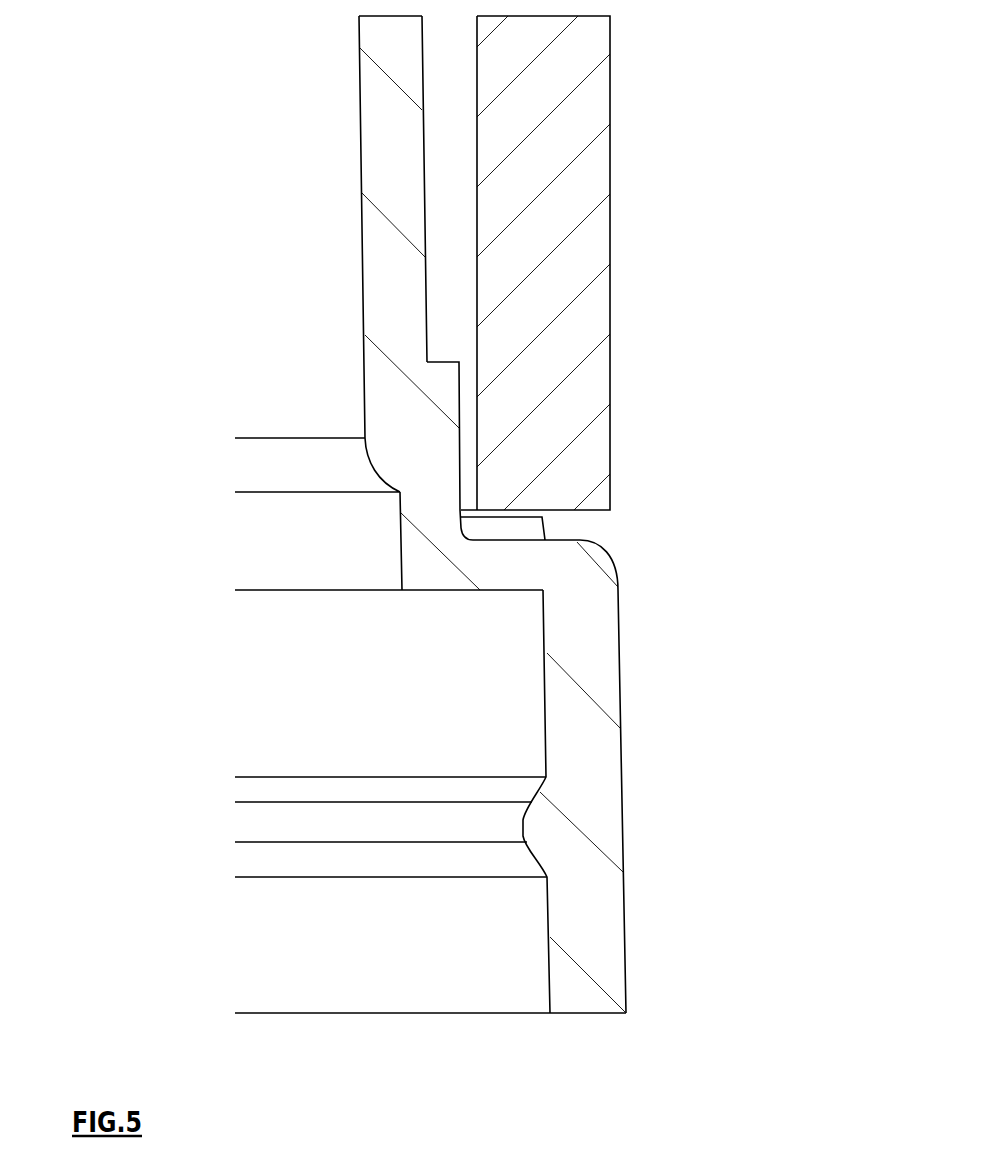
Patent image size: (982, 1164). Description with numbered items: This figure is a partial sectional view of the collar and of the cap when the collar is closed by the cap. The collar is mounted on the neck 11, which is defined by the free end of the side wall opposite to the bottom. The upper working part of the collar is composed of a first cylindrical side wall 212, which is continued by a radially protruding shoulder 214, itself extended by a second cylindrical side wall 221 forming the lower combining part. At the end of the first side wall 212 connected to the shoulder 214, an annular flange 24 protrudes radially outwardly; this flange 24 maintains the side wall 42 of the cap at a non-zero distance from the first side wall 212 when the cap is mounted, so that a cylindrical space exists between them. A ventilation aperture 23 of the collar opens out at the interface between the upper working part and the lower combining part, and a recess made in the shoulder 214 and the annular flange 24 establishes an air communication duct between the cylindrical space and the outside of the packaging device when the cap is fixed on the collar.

The neck 11 is at (508, 693).
The first cylindrical side wall 212 is at (368, 143).
The shoulder 214 is at (462, 573).
The second cylindrical side wall 221 is at (610, 720).
The ventilation aperture 23 is at (563, 528).
The annular flange 24 is at (435, 392).
The side wall 42 is at (576, 196).